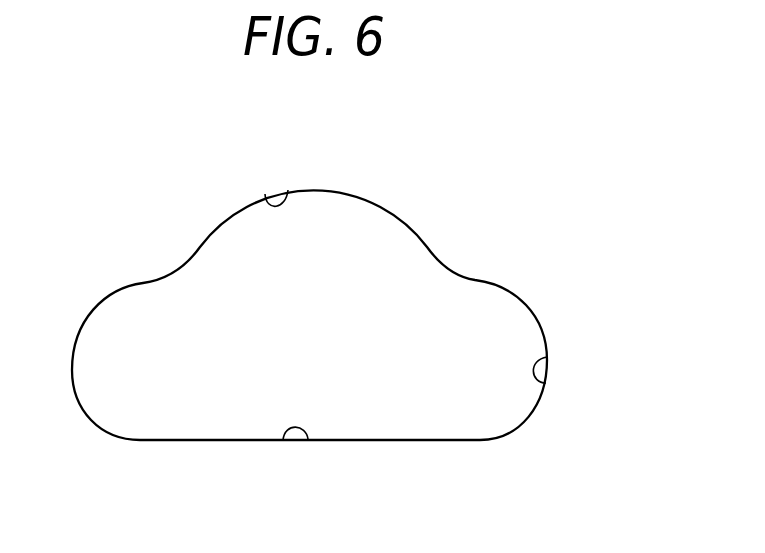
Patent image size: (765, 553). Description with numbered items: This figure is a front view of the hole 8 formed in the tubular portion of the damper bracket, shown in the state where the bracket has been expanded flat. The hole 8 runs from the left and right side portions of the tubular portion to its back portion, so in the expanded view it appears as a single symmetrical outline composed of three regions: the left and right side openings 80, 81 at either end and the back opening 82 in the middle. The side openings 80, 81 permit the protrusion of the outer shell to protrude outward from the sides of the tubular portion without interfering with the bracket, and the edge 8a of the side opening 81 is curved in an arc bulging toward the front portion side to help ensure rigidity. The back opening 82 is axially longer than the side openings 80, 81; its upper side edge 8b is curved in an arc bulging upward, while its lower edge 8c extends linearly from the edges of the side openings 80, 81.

The hole 8 is at (363, 222).
The edge of the side opening 8a is at (546, 383).
The upper side edge of the back opening 8b is at (265, 194).
The lower edge of the back opening 8c is at (284, 440).
The side opening 80 is at (152, 378).
The side opening 81 is at (482, 378).
The back opening 82 is at (323, 320).